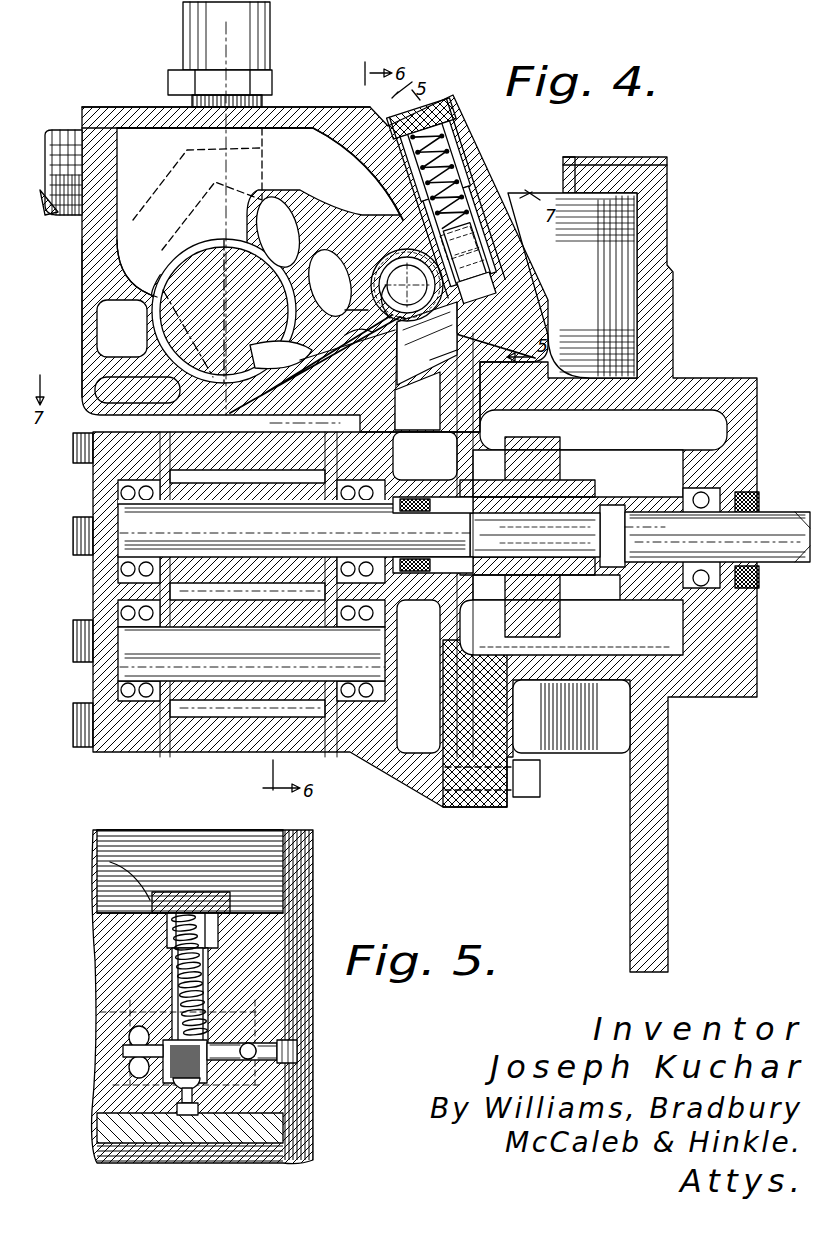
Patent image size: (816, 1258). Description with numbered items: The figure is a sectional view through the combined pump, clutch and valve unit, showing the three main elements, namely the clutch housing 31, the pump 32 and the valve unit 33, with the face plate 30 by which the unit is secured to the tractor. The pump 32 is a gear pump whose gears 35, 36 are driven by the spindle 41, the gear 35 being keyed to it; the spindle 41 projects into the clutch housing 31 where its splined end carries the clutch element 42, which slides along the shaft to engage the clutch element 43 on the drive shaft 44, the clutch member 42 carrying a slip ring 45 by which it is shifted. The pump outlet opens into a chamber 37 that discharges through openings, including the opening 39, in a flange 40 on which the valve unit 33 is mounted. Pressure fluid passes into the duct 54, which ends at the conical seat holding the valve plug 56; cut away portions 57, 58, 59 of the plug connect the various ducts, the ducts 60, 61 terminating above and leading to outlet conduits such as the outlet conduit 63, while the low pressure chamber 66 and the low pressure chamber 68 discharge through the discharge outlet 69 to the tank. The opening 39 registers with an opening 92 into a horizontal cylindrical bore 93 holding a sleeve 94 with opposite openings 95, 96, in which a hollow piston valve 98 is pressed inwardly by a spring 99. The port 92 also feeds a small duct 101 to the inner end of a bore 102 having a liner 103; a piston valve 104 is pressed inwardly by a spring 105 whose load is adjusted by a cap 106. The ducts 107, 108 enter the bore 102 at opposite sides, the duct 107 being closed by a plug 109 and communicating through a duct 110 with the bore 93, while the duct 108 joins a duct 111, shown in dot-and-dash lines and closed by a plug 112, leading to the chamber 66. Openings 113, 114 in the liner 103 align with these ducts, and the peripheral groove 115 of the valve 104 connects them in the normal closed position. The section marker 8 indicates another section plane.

In FIG. 4, the section line 8- 8 is at (258, 423).
In FIG. 4, the face plate 30 is at (665, 300).
In FIG. 4, the clutch housing 31 is at (590, 685).
In FIG. 4, the pump 32 is at (200, 762).
In FIG. 4, the valve unit 33 is at (85, 300).
In FIG. 4, the gear 35 is at (100, 578).
In FIG. 4, the gear 36 is at (100, 604).
In FIG. 4, the chamber 37 is at (432, 610).
In FIG. 5, the chamber 37 is at (150, 1163).
In FIG. 4, the opening 39 is at (443, 375).
In FIG. 4, the flange 40 is at (552, 330).
In FIG. 4, the spindle 41 is at (295, 589).
In FIG. 4, the clutch element 42 is at (560, 595).
In FIG. 4, the clutch element 43 is at (645, 585).
In FIG. 4, the drive shaft 44 is at (780, 520).
In FIG. 4, the slip ring 45 is at (560, 445).
In FIG. 4, the duct 54 is at (330, 283).
In FIG. 4, the valve plug 56 is at (215, 215).
In FIG. 4, the cut away portion 57 is at (165, 297).
In FIG. 4, the cut away portion 58 is at (224, 311).
In FIG. 4, the cut away portion 59 is at (347, 345).
In FIG. 4, the duct 60 is at (150, 248).
In FIG. 4, the duct 61 is at (122, 328).
In FIG. 4, the outlet conduit 63 is at (272, 45).
In FIG. 4, the low pressure chamber 66 is at (215, 164).
In FIG. 5, the low pressure chamber 66 is at (105, 862).
In FIG. 4, the low pressure chamber 68 is at (315, 364).
In FIG. 4, the discharge outlet 69 is at (62, 145).
In FIG. 4, the opening 92 is at (426, 366).
In FIG. 4, the bore 93 is at (402, 262).
In FIG. 4, the sleeve 94 is at (360, 255).
In FIG. 4, the opening 95 is at (417, 401).
In FIG. 4, the opening 96 is at (400, 274).
In FIG. 4, the piston valve 98 is at (334, 300).
In FIG. 4, the spring 99 is at (352, 334).
In FIG. 4, the duct 101 is at (466, 343).
In FIG. 5, the duct 101 is at (188, 1113).
In FIG. 4, the bore 102 is at (485, 185).
In FIG. 5, the bore 102 is at (172, 975).
In FIG. 4, the liner 103 is at (470, 165).
In FIG. 5, the liner 103 is at (168, 948).
In FIG. 4, the piston valve 104 is at (496, 227).
In FIG. 5, the piston valve 104 is at (176, 1082).
In FIG. 4, the spring 105 is at (458, 122).
In FIG. 5, the spring 105 is at (178, 932).
In FIG. 4, the cap 106 is at (430, 92).
In FIG. 5, the cap 106 is at (152, 900).
In FIG. 4, the duct 107 is at (560, 277).
In FIG. 5, the duct 107 is at (290, 1042).
In FIG. 5, the duct 108 is at (123, 1050).
In FIG. 5, the plug 109 is at (302, 1056).
In FIG. 4, the duct 110 is at (475, 296).
In FIG. 5, the duct 110 is at (300, 1050).
In FIG. 4, the duct 111 is at (372, 172).
In FIG. 5, the duct 111 is at (95, 1000).
In FIG. 4, the plug 112 is at (558, 302).
In FIG. 5, the opening 113 is at (290, 1072).
In FIG. 5, the opening 114 is at (128, 1035).
In FIG. 4, the peripheral groove 115 is at (506, 243).
In FIG. 5, the peripheral groove 115 is at (165, 1064).